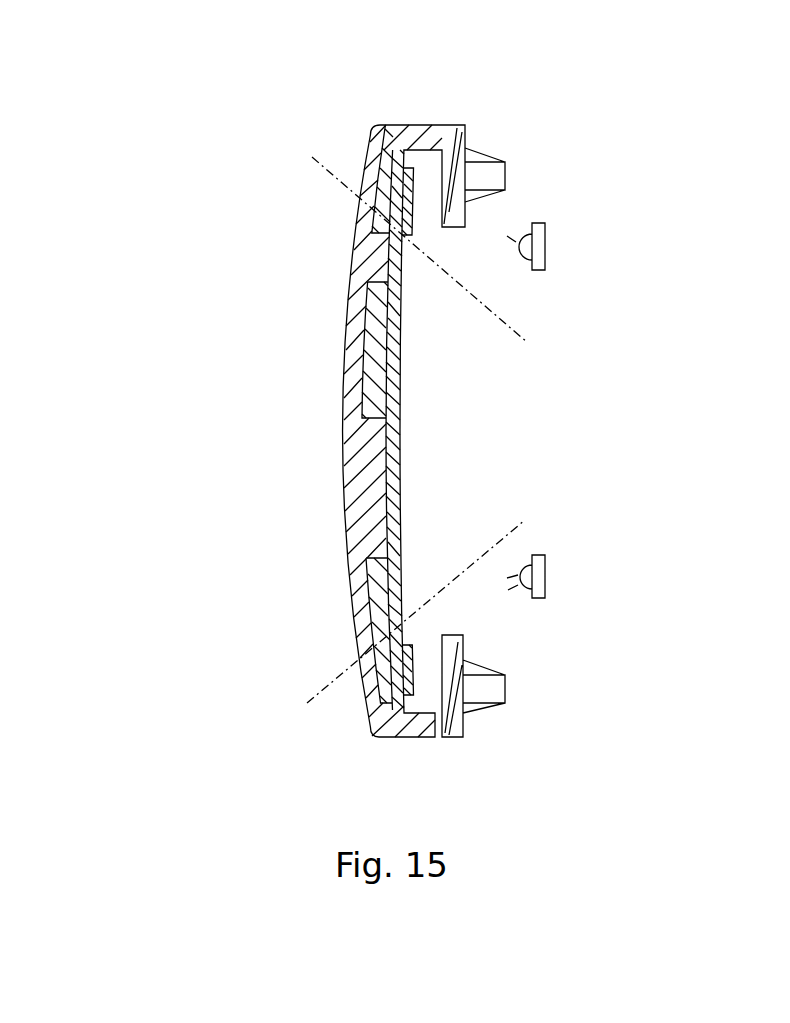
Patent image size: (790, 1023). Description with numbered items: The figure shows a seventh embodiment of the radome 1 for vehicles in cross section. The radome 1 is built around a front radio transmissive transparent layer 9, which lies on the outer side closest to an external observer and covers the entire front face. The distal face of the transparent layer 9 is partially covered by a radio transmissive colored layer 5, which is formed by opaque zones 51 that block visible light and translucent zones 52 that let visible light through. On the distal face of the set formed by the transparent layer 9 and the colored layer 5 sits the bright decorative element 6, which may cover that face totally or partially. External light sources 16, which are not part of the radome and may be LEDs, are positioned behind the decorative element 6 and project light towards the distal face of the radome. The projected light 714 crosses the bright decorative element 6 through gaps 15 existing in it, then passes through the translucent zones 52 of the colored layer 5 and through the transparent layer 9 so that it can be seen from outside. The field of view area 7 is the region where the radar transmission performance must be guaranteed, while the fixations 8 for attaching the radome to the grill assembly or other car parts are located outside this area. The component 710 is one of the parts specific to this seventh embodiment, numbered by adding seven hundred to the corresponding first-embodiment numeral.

The radome 1 is at (371, 394).
The radio transmissive colored layer 5 is at (308, 433).
The opaque zones 51 is at (385, 173).
The translucent zones 52 is at (366, 370).
The bright decorative element 6 is at (393, 250).
The field of view area 7 is at (430, 437).
The projected light 714 is at (518, 246).
The gaps 15 is at (405, 530).
The external light sources 16 is at (542, 225).
The fixations 8 is at (487, 180).
The front radio transmissive transparent layer 9 is at (360, 528).
The component of the seventh embodiment 710 is at (453, 717).